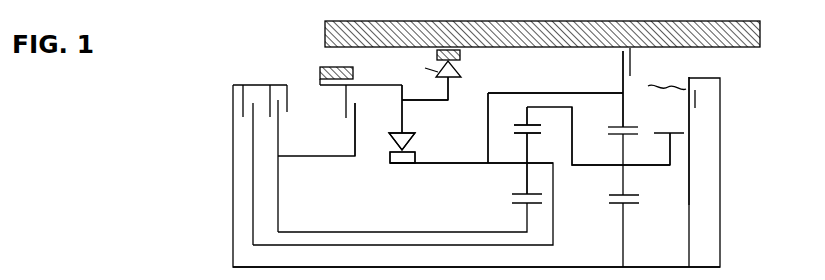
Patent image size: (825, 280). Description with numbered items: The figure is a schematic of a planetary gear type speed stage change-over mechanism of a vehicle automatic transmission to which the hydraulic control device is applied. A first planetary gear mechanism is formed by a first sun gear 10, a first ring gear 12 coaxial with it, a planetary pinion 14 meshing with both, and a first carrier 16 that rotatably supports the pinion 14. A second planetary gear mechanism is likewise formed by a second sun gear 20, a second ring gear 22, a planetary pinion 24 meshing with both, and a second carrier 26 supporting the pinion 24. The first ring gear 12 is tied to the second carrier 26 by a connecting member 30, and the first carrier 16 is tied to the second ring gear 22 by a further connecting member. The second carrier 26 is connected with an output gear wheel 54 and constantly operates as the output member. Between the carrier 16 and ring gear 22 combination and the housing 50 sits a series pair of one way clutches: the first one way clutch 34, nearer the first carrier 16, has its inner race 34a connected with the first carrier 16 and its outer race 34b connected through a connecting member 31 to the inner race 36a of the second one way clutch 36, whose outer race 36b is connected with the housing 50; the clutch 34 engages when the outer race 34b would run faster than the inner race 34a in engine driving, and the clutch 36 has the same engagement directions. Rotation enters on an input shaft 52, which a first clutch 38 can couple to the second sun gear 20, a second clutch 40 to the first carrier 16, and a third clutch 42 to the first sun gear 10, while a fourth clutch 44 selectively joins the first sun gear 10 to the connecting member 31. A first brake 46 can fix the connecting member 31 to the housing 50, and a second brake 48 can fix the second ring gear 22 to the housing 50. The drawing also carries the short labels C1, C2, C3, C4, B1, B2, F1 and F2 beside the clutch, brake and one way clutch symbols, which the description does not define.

The first sun gear 10 is at (530, 207).
The first ring gear 12 is at (521, 123).
The planetary pinion 14 is at (522, 135).
The first carrier 16 is at (467, 168).
The second sun gear 20 is at (620, 210).
The second ring gear 22 is at (612, 124).
The planetary pinion 24 is at (630, 136).
The second carrier 26 is at (588, 168).
The connecting member 30 is at (552, 110).
The connecting member 31 is at (405, 104).
The first one way clutch 34 is at (412, 145).
The inner race 34a is at (402, 166).
The outer race 34b is at (392, 141).
The second one way clutch 36 is at (440, 78).
The inner race 36a is at (449, 82).
The outer race 36b is at (460, 55).
The first clutch 38 is at (636, 110).
The second clutch 40 is at (233, 108).
The third clutch 42 is at (280, 107).
The fourth clutch 44 is at (356, 107).
The first brake 46 is at (353, 73).
The second brake 48 is at (616, 87).
The housing 50 is at (760, 40).
The input shaft 52 is at (758, 264).
The output gear wheel 54 is at (668, 129).
The capacitor C1 is at (671, 131).
The capacitor C2 is at (246, 154).
The capacitor C3 is at (283, 147).
The capacitor C4 is at (342, 120).
The battery B1 is at (308, 51).
The battery B2 is at (612, 71).
The diode F1 is at (379, 180).
The diode F2 is at (421, 67).